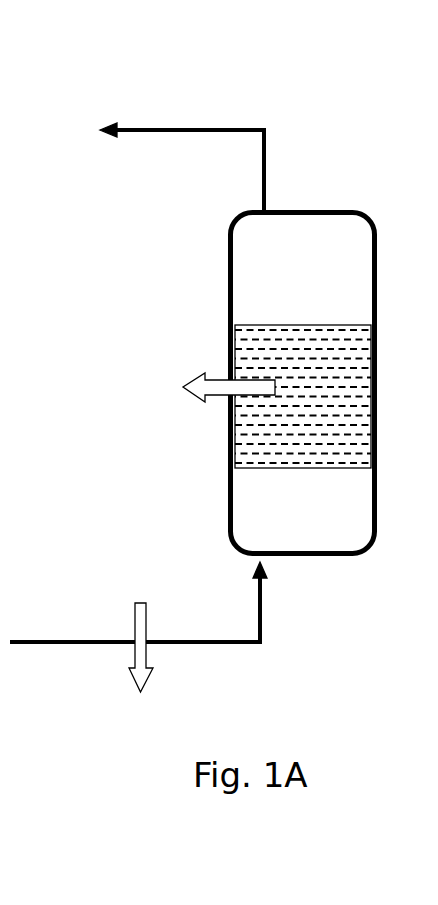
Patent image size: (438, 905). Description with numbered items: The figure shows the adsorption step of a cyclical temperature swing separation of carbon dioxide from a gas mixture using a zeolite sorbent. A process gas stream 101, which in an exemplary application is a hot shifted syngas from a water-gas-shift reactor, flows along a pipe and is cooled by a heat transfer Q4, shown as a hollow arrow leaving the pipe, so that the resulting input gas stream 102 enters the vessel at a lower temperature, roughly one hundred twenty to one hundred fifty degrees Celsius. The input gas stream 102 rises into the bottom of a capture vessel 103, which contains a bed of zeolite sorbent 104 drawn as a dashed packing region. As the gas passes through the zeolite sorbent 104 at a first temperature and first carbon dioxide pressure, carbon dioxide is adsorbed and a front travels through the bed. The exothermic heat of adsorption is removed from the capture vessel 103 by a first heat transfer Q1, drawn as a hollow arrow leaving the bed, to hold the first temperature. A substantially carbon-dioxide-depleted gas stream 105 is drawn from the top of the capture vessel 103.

The process gas stream 101 is at (62, 643).
The input gas stream 102 is at (227, 647).
The capture vessel 103 is at (230, 285).
The zeolite sorbent 104 is at (253, 353).
The CO2-depleted gas stream 105 is at (187, 126).
The first heat transfer Q1 is at (228, 382).
The heat transfer Q4 is at (135, 617).